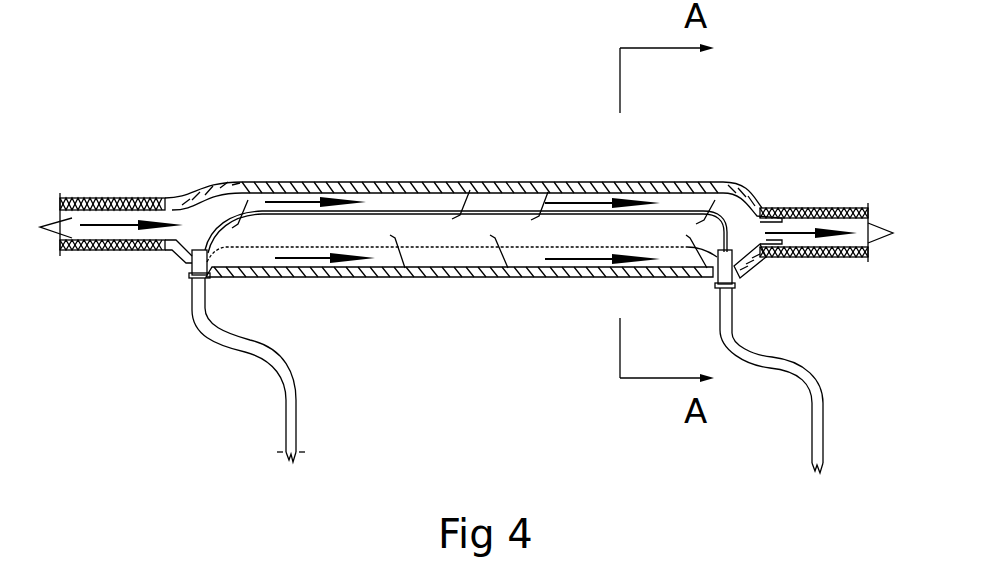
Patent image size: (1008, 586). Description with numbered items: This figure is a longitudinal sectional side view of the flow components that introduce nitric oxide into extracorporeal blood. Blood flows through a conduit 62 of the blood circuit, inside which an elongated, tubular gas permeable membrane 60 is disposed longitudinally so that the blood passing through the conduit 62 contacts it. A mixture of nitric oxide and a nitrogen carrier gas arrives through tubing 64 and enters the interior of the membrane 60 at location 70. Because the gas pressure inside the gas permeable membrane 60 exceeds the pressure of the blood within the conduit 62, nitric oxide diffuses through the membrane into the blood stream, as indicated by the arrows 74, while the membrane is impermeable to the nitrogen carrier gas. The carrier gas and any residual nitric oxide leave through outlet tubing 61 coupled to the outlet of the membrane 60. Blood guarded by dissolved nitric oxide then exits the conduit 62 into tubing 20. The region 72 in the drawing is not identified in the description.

The tubing 20 is at (832, 183).
The gas permeable membrane 60 is at (466, 185).
The outlet tubing 61 is at (822, 435).
The conduit 62 is at (473, 180).
The tubing 64 is at (297, 432).
The location 70 is at (190, 268).
The outer flow channel 72 is at (436, 177).
The arrows 74 is at (473, 179).